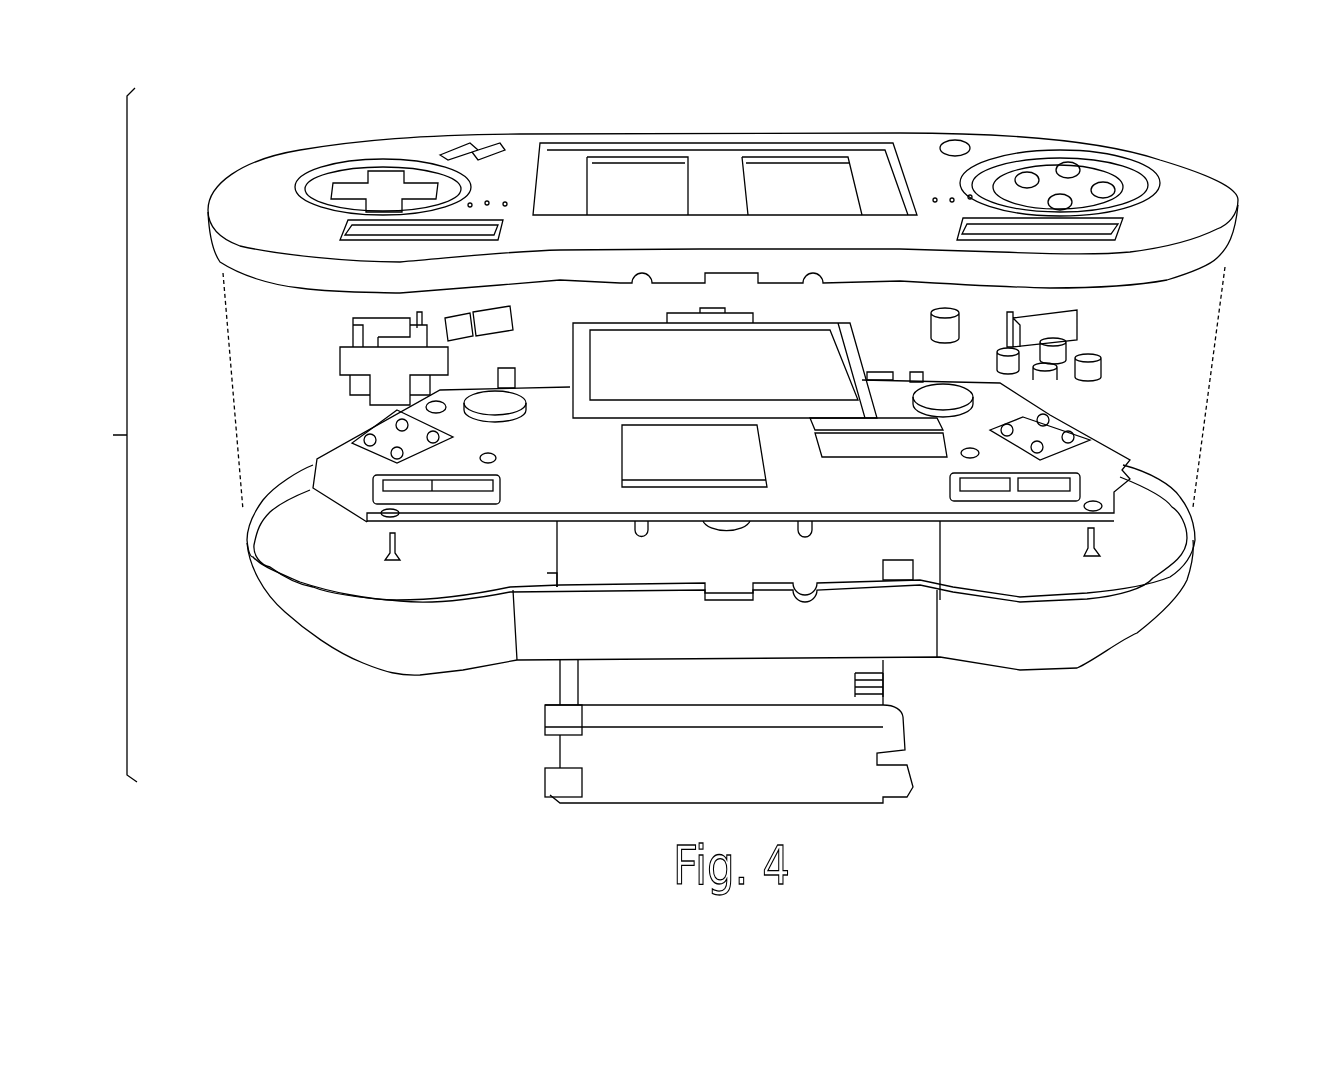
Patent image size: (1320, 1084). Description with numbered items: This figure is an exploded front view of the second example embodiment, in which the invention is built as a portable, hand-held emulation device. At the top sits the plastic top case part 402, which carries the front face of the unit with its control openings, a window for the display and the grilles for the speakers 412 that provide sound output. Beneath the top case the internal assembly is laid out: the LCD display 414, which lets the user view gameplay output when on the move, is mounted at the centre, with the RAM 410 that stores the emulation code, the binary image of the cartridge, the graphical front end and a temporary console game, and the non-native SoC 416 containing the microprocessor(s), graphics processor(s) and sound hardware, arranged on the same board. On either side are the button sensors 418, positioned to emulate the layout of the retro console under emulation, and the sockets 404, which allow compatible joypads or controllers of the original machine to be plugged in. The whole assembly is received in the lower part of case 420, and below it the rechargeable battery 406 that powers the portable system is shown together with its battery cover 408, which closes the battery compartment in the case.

The plastic top case part 402 is at (263, 184).
The sockets 404 is at (447, 498).
The rechargeable battery 406 is at (635, 683).
The battery cover 408 is at (838, 750).
The RAM 410 is at (848, 450).
The speakers 412 is at (945, 395).
The LCD display 414 is at (722, 368).
The non-native SoC 416 is at (657, 458).
The button sensors 418 is at (392, 440).
The lower part of case 420 is at (1093, 622).